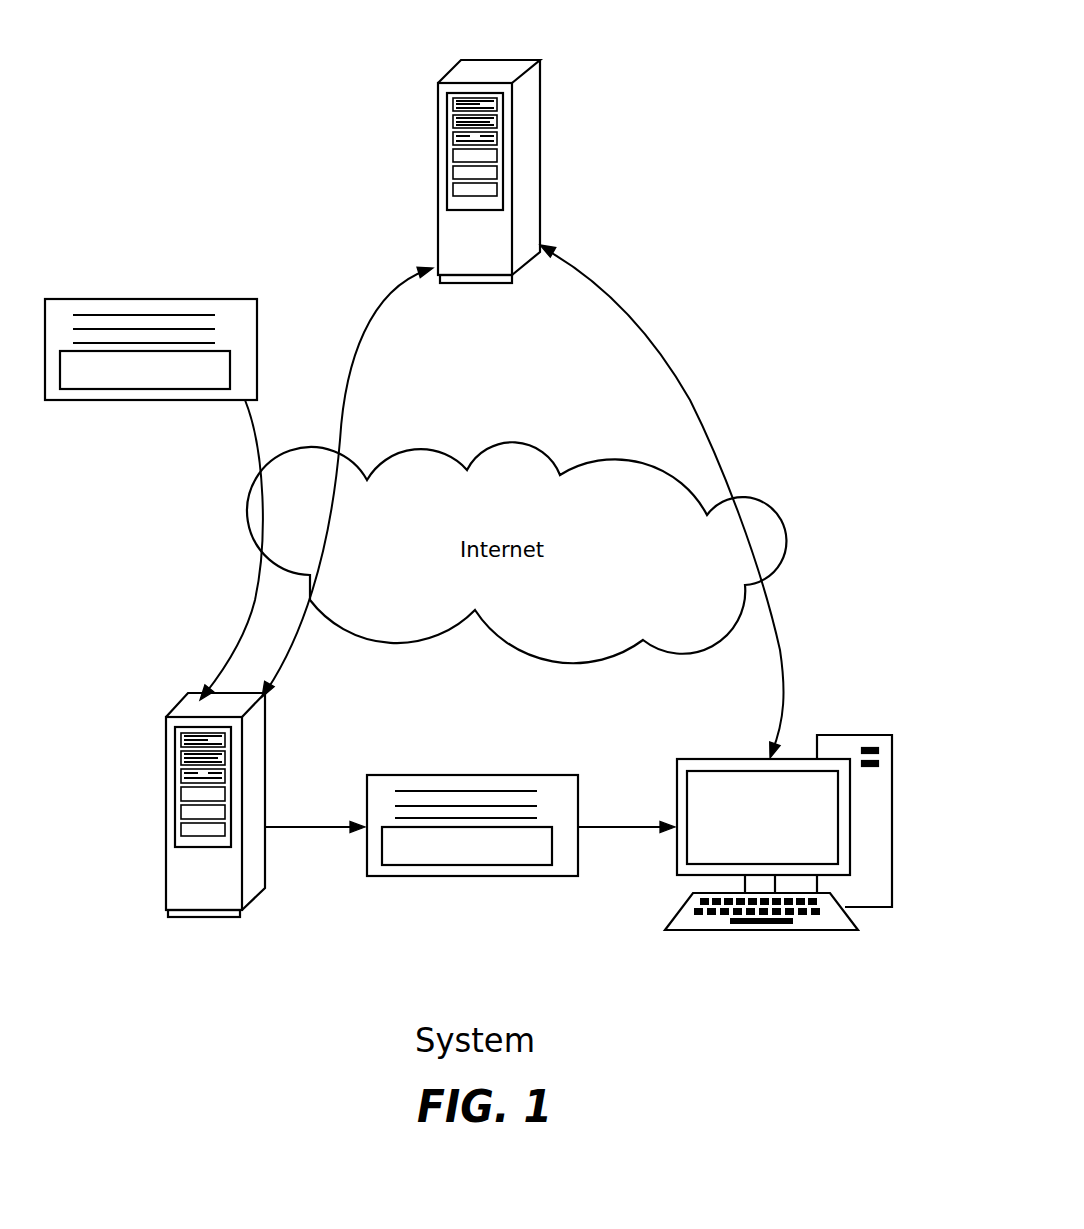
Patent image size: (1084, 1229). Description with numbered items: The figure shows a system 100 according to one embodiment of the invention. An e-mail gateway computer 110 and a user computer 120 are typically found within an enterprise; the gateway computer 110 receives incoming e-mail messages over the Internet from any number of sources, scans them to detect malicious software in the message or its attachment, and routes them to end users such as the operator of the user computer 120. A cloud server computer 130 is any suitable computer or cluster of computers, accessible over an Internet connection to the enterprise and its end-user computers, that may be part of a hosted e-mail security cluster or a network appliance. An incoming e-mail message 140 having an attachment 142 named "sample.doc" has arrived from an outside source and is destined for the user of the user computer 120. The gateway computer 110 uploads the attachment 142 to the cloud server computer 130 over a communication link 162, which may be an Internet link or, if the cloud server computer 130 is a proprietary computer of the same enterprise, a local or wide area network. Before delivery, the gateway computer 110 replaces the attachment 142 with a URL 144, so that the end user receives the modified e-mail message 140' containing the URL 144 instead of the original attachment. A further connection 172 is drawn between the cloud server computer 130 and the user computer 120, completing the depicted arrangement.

The system 100 is at (760, 222).
The e-mail gateway computer 110 is at (166, 835).
The user computer 120 is at (850, 827).
The cloud server computer 130 is at (530, 200).
The incoming e-mail message 140 is at (181, 358).
The e-mail message 140' is at (506, 832).
The attachment 142 is at (83, 389).
The URL 144 is at (440, 860).
The communication link 162 is at (345, 382).
The communication path between cloud server and user computer 172 is at (692, 393).